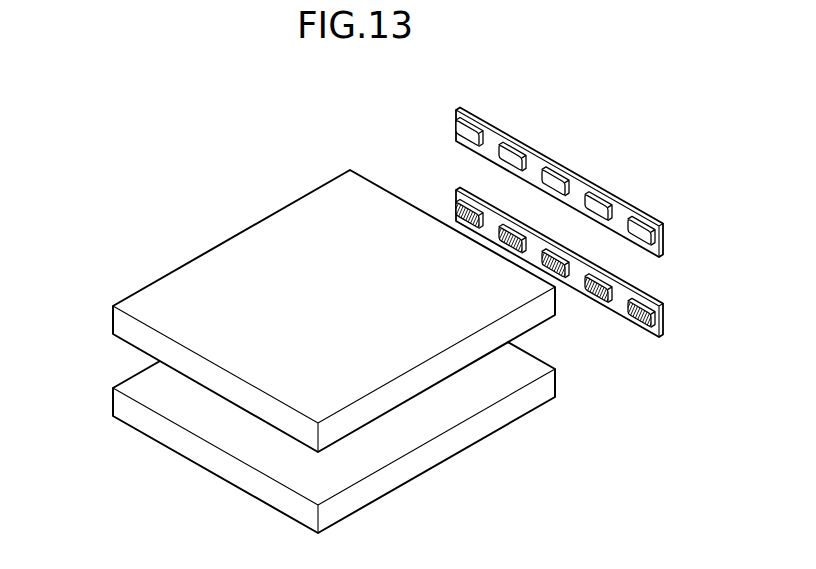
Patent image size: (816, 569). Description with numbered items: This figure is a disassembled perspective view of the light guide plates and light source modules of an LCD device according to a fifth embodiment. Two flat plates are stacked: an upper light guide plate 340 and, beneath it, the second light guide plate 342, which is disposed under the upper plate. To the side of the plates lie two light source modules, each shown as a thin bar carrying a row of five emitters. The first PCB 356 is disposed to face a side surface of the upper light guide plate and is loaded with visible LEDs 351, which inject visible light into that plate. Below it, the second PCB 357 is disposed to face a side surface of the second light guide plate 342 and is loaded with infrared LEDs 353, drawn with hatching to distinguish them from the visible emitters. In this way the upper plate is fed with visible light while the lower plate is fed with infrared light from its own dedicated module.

The first substrate 340 is at (123, 323).
The second light guide plate 342 is at (123, 407).
The visible LEDs 351 is at (645, 238).
The infrared LEDs 353 is at (643, 322).
The first PCB 356 is at (628, 205).
The second PCB 357 is at (648, 298).